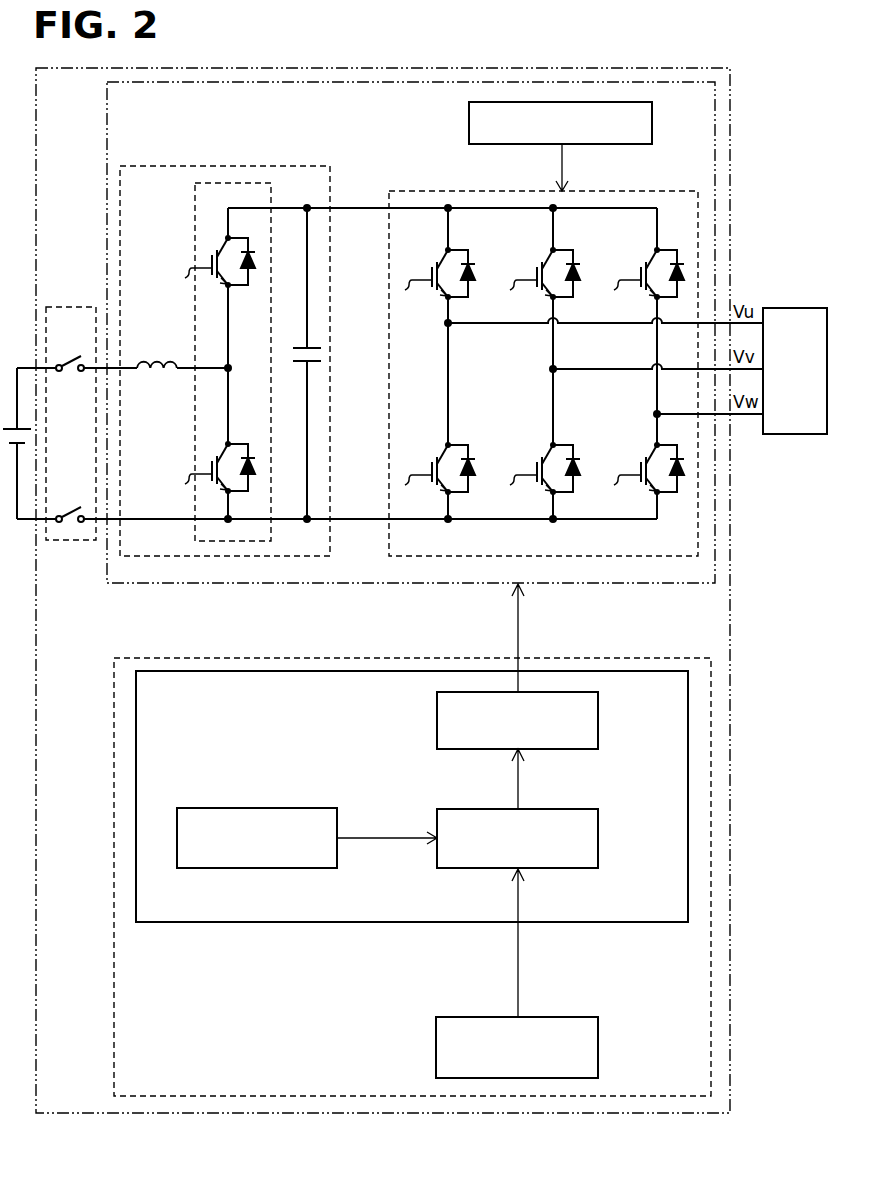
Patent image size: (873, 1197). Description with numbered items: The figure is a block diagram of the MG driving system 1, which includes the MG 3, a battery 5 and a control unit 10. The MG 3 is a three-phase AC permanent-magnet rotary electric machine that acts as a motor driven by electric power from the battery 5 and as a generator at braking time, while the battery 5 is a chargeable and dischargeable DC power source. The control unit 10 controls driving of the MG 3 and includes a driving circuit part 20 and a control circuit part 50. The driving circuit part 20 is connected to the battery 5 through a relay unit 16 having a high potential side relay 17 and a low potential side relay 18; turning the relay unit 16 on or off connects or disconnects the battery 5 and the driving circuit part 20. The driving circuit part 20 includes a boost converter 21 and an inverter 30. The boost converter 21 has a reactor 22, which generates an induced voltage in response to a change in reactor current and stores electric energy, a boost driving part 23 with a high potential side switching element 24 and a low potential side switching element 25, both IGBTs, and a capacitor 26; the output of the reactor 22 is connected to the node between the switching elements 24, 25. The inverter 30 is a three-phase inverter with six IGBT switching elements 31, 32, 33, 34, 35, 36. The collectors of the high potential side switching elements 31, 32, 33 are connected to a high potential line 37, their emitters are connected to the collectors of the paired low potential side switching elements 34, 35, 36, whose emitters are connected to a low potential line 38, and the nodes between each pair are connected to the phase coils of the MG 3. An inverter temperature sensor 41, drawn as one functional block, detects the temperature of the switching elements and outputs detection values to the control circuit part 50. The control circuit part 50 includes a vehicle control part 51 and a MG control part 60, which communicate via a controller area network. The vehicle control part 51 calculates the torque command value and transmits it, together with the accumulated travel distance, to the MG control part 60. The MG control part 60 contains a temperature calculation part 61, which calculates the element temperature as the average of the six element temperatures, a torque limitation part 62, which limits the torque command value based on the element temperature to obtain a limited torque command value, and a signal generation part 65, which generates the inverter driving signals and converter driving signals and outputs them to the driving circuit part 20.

The MG driving system 1 is at (805, 478).
The MG 3 is at (791, 436).
The battery 5 is at (11, 428).
The control unit 10 is at (731, 541).
The relay unit 16 is at (57, 306).
The high potential side relay 17 is at (74, 356).
The low potential side relay 18 is at (76, 507).
The driving circuit part 20 is at (205, 584).
The boost converter 21 is at (141, 165).
The reactor 22 is at (142, 356).
The boost driving part 23 is at (194, 214).
The high potential side switching element 24 is at (227, 239).
The low potential side switching element 25 is at (227, 443).
The capacitor 26 is at (299, 348).
The inverter 30 is at (417, 190).
The switching element 31 is at (447, 250).
The switching element 32 is at (552, 250).
The switching element 33 is at (656, 250).
The switching element 34 is at (447, 443).
The switching element 35 is at (552, 443).
The switching element 36 is at (656, 443).
The high potential line 37 is at (361, 213).
The low potential line 38 is at (361, 523).
The inverter temperature sensor 41 is at (653, 112).
The control circuit part 50 is at (146, 657).
The vehicle control part 51 is at (599, 1046).
The MG control part 60 is at (172, 923).
The temperature calculation part 61 is at (205, 869).
The torque limitation part 62 is at (599, 839).
The signal generation part 65 is at (599, 716).